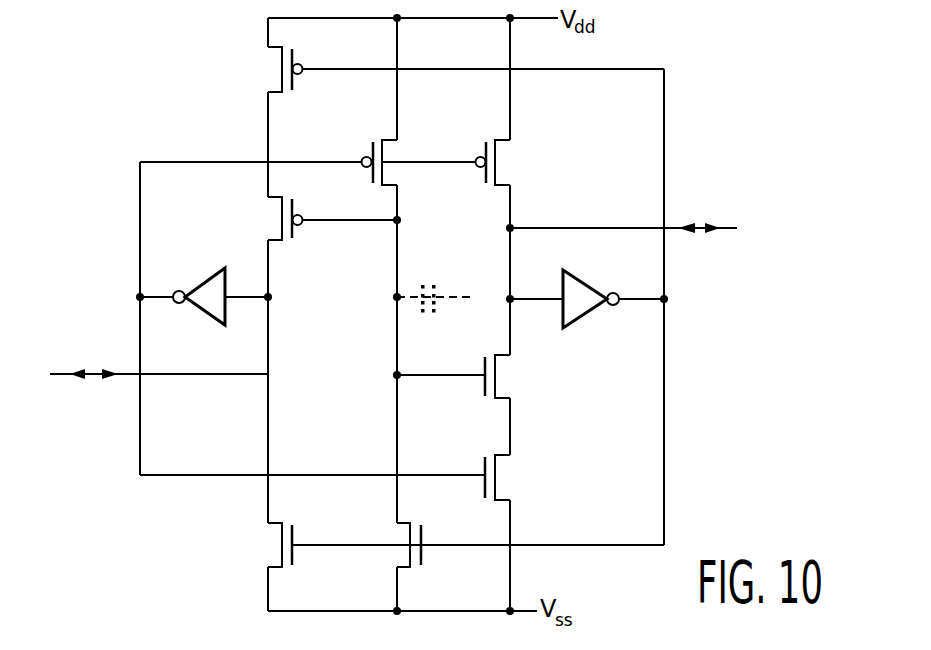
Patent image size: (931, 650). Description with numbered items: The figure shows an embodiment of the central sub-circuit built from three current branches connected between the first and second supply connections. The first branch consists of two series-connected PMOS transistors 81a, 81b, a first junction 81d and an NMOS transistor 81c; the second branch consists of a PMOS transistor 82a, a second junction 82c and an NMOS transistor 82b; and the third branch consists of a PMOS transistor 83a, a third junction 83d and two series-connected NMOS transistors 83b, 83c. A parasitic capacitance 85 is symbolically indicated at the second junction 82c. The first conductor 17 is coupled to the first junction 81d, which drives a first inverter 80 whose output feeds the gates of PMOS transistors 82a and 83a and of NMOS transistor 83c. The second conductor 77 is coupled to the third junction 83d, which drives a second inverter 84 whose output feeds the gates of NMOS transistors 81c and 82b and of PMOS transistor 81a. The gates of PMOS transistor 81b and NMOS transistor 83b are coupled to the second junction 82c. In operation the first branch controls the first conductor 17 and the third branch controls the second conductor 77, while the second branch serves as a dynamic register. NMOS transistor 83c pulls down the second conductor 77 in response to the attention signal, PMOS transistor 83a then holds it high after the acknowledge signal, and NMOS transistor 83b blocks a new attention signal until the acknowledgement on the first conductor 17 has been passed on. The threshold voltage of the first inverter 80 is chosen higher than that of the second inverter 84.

The first conductor 17 is at (93, 370).
The second conductor 77 is at (700, 225).
The first inverter 80 is at (205, 315).
The PMOS transistor 81a is at (266, 67).
The PMOS transistor 81b is at (268, 212).
The NMOS transistor 81c is at (266, 547).
The first junction 81d is at (275, 297).
The PMOS transistor 82a is at (400, 150).
The NMOS transistor 82b is at (400, 532).
The second junction 82c is at (393, 375).
The PMOS transistor 83a is at (505, 157).
The NMOS transistor 83b is at (507, 383).
The NMOS transistor 83c is at (507, 485).
The third junction 83d is at (507, 227).
The second inverter 84 is at (594, 284).
The parasitic capacitance 85 is at (423, 283).